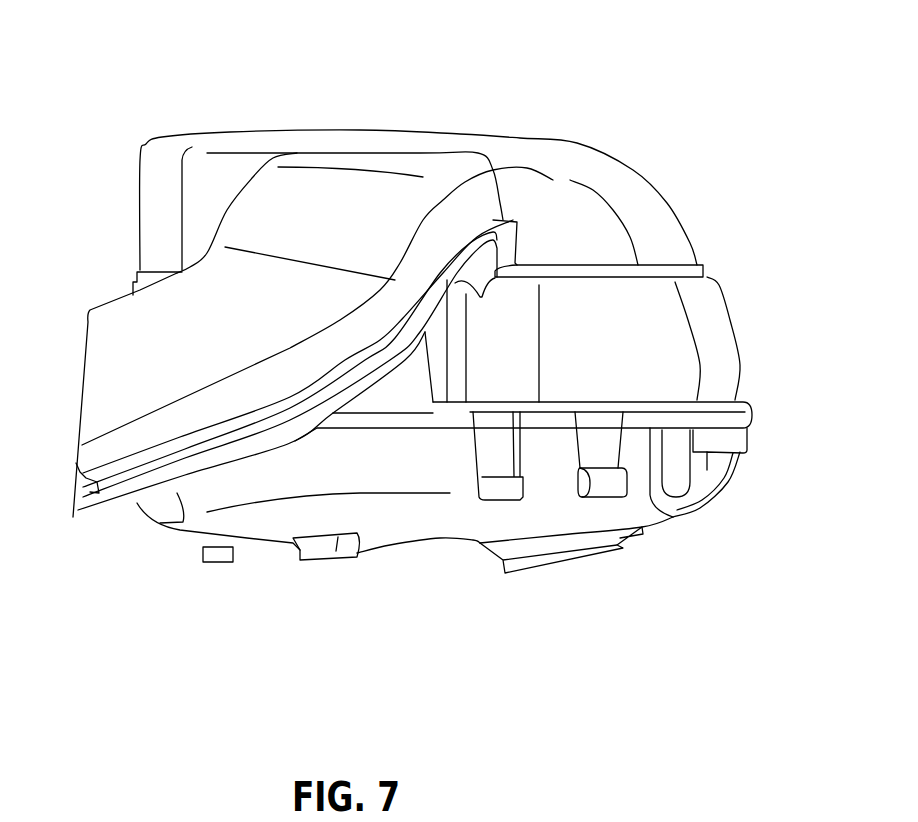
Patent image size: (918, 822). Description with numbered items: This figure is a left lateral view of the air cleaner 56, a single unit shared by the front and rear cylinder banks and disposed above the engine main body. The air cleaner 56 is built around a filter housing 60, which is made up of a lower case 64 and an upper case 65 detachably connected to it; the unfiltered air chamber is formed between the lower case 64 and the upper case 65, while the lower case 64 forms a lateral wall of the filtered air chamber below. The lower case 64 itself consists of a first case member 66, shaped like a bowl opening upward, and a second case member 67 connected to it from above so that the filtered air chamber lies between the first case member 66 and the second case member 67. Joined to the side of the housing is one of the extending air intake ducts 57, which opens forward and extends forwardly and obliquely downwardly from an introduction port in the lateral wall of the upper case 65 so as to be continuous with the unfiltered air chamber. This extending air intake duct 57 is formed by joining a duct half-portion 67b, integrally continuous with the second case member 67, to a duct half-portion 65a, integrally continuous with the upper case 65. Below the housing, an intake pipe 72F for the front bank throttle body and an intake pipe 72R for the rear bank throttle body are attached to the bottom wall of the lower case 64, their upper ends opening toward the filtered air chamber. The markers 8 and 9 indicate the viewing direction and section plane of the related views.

The air cleaner 56 is at (577, 143).
The upper case 65 is at (657, 207).
The extending air intake duct 57 is at (283, 625).
The duct half-portion 65a is at (197, 427).
The duct half-portion 67b is at (240, 453).
The second case member 67 is at (710, 307).
The first case member 66 is at (718, 433).
The lower case 64 is at (783, 273).
The filter housing 60 is at (687, 513).
The intake pipe 72F is at (305, 567).
The intake pipe 72R is at (553, 570).
The section line 8 is at (468, 112).
The section line 9 is at (412, 113).